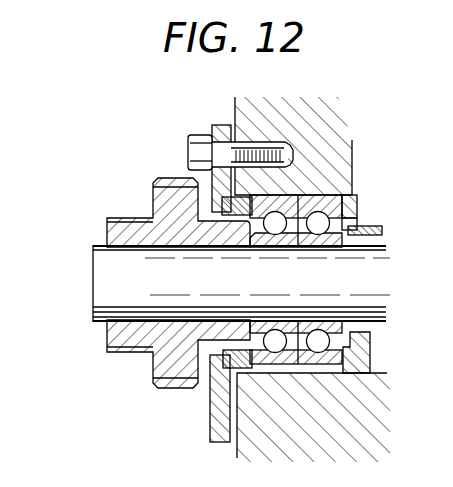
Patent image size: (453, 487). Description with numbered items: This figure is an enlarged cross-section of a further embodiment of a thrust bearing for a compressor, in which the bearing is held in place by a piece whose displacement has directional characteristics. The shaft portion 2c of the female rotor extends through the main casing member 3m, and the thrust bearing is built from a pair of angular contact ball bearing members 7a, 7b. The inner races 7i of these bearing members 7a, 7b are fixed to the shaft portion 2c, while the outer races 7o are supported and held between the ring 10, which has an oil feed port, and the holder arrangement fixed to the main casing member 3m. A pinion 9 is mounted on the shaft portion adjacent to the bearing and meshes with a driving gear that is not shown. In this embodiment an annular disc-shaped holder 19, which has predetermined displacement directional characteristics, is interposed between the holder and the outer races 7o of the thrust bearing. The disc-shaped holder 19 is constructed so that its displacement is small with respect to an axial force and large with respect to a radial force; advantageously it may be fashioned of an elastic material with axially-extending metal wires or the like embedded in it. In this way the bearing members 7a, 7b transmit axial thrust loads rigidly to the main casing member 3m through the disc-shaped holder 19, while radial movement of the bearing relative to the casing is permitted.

The shaft portion 2c is at (93, 302).
The main casing member 3m is at (360, 410).
The angular contact ball bearing member 7a is at (318, 365).
The angular contact ball bearing member 7b is at (272, 364).
The inner races 7i is at (311, 321).
The outer races 7o is at (285, 207).
The pinion 9 is at (152, 365).
The ring 10 is at (354, 207).
The disc-shaped holder 19 is at (210, 428).